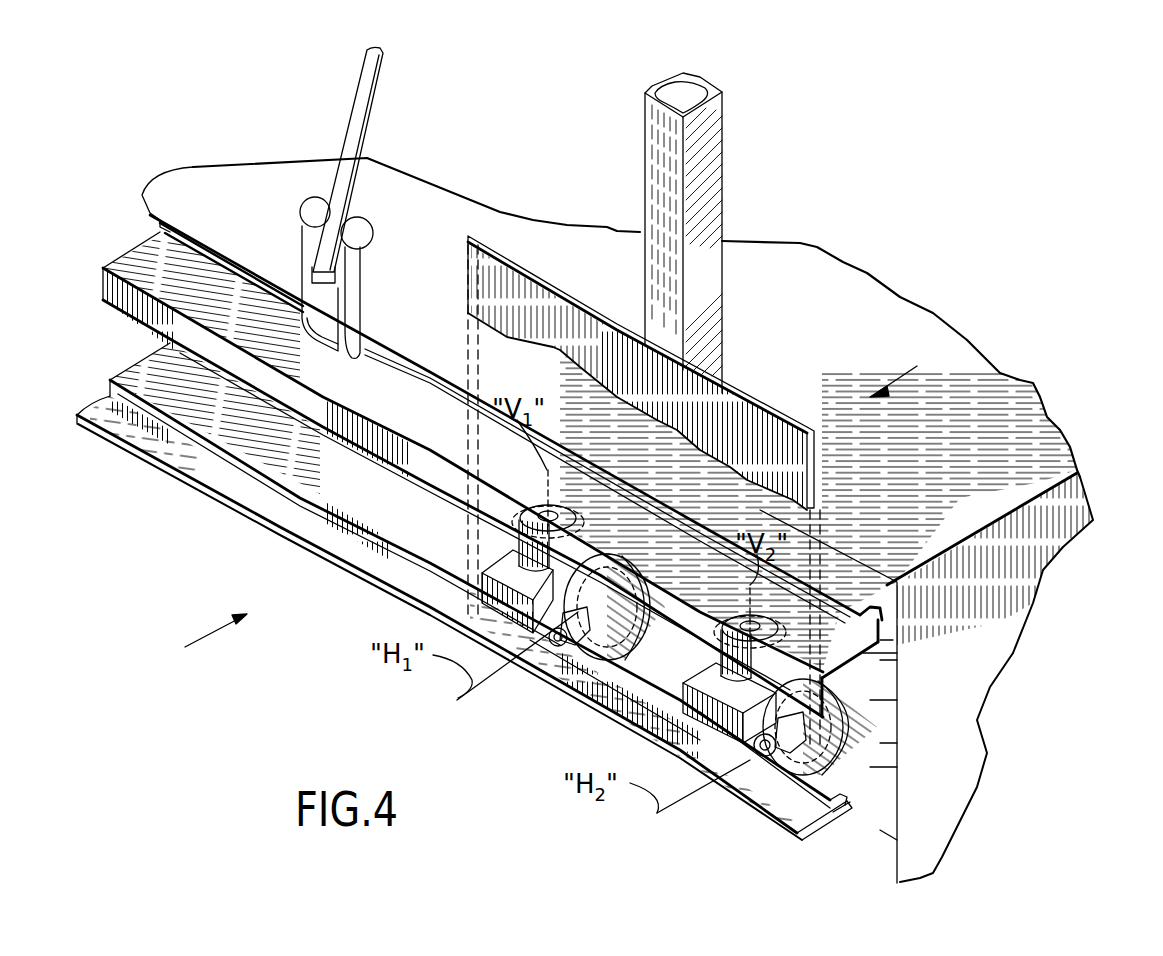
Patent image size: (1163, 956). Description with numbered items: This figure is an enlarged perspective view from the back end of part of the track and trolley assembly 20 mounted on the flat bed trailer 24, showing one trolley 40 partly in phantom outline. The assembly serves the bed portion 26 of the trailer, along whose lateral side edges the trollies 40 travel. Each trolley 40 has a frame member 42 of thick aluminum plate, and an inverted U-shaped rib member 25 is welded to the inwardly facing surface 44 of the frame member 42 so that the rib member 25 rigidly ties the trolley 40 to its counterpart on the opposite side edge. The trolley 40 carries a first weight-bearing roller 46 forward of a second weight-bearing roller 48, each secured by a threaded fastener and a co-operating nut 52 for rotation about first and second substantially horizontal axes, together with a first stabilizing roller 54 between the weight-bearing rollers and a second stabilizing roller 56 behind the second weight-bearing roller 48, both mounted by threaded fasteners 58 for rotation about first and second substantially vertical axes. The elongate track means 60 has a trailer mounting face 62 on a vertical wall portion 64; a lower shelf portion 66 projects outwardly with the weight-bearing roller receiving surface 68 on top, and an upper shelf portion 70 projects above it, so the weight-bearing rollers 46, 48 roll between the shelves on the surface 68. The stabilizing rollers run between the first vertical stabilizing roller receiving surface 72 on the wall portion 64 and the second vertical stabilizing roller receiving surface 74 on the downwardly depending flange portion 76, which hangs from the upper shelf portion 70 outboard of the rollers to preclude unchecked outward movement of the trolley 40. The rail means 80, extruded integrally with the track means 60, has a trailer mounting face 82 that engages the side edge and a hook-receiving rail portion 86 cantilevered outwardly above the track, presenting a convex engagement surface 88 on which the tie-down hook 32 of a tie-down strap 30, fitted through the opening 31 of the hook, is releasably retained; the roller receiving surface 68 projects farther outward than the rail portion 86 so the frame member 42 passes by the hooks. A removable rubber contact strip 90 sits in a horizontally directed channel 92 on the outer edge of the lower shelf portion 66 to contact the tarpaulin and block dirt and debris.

The track and trolley assembly 20 is at (198, 644).
The flat bed trailer 24 is at (985, 745).
The inverted U-shaped rib member 25 is at (715, 198).
The bed portion 26 is at (1040, 515).
The tie-down strap 30 is at (365, 107).
The opening 31 is at (312, 262).
The tie-down hook 32 is at (363, 262).
The trolley 40 is at (617, 520).
The frame member 42 is at (505, 292).
The inwardly facing surface 44 is at (755, 376).
The first weight-bearing roller 46 is at (660, 575).
The second weight-bearing roller 48 is at (865, 718).
The nut 52 is at (562, 642).
The first stabilizing roller 54 is at (750, 612).
The second stabilizing roller 56 is at (563, 517).
The threaded fastener 58 is at (543, 514).
The elongate track means 60 is at (900, 636).
The trailer mounting face 62 is at (900, 743).
The vertical wall portion 64 is at (897, 660).
The lower shelf portion 66 is at (836, 815).
The weight-bearing roller receiving surface 68 is at (890, 847).
The upper shelf portion 70 is at (887, 670).
The first vertical stabilizing roller receiving surface 72 is at (897, 767).
The second vertical stabilizing roller receiving surface 74 is at (887, 700).
The downwardly depending flange portion 76 is at (430, 473).
The rail means 80 is at (877, 587).
The trailer mounting face 82 is at (900, 595).
The hook-receiving rail portion 86 is at (862, 600).
The convex engagement surface 88 is at (416, 368).
The rubber contact strip 90 is at (812, 825).
The channel 92 is at (824, 826).